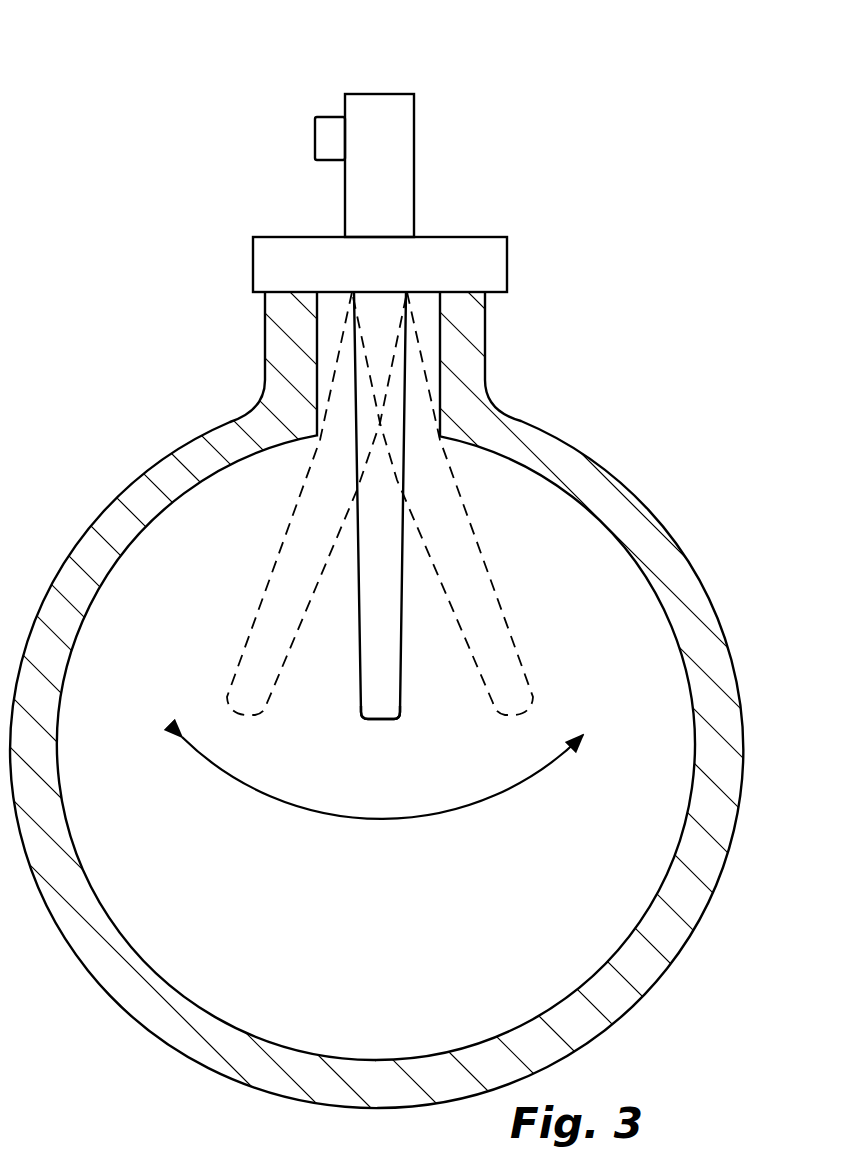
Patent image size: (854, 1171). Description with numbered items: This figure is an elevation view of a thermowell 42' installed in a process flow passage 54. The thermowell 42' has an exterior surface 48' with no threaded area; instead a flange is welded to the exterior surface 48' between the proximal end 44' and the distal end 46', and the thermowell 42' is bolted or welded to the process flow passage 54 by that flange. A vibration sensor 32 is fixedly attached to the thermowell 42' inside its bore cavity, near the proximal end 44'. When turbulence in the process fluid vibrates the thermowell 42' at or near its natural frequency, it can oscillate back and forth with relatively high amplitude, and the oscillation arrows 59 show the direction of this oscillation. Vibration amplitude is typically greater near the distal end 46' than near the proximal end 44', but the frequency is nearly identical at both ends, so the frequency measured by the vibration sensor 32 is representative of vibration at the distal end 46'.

The vibration sensor 32 is at (323, 117).
The proximal end 44' is at (412, 133).
The exterior surface 48' is at (383, 220).
The thermowell 42' is at (380, 518).
The distal end 46' is at (404, 733).
The process flow passage 54 is at (652, 493).
The oscillation arrows 59 is at (277, 801).